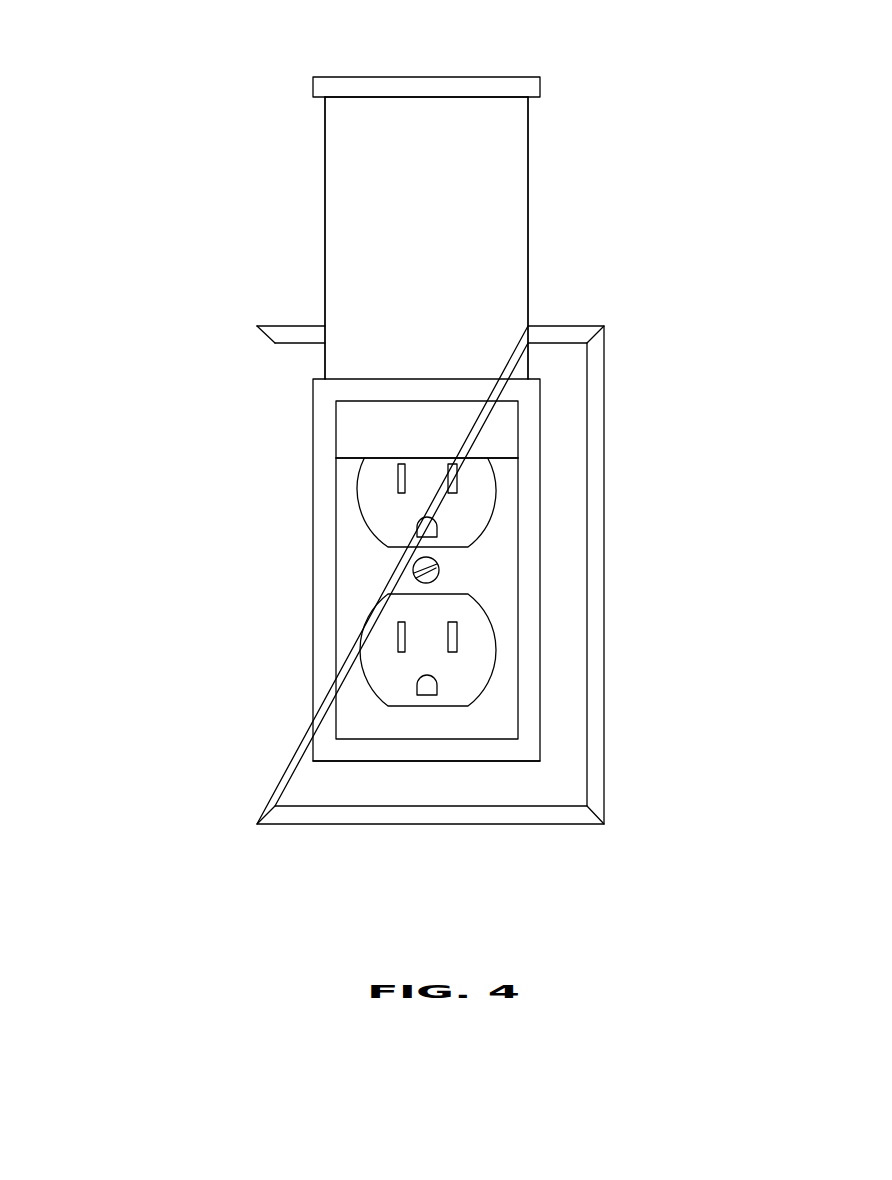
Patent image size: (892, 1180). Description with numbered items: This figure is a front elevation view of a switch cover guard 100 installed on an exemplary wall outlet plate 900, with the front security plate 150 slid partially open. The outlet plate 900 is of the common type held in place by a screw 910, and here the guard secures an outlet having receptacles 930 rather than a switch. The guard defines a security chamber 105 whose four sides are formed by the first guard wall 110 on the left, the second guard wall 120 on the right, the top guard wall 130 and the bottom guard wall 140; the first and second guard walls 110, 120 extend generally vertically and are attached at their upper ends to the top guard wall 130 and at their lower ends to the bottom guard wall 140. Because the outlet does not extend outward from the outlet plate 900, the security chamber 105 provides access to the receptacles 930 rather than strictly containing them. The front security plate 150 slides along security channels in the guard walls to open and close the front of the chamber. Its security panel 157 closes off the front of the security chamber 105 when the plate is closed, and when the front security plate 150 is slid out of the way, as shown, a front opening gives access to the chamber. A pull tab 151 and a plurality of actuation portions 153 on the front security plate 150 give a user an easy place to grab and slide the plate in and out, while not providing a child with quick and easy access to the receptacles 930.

The switch cover guard 100 is at (664, 923).
The security chamber 105 is at (352, 728).
The first guard wall 110 is at (323, 642).
The second guard wall 120 is at (532, 627).
The top guard wall 130 is at (482, 378).
The bottom guard wall 140 is at (431, 753).
The front security plate 150 is at (232, 186).
The pull tab 151 is at (427, 75).
The actuation portions 153 is at (309, 121).
The security panel 157 is at (390, 245).
The wall outlet plate 900 is at (568, 415).
The screw 910 is at (430, 575).
The receptacles 930 is at (495, 502).